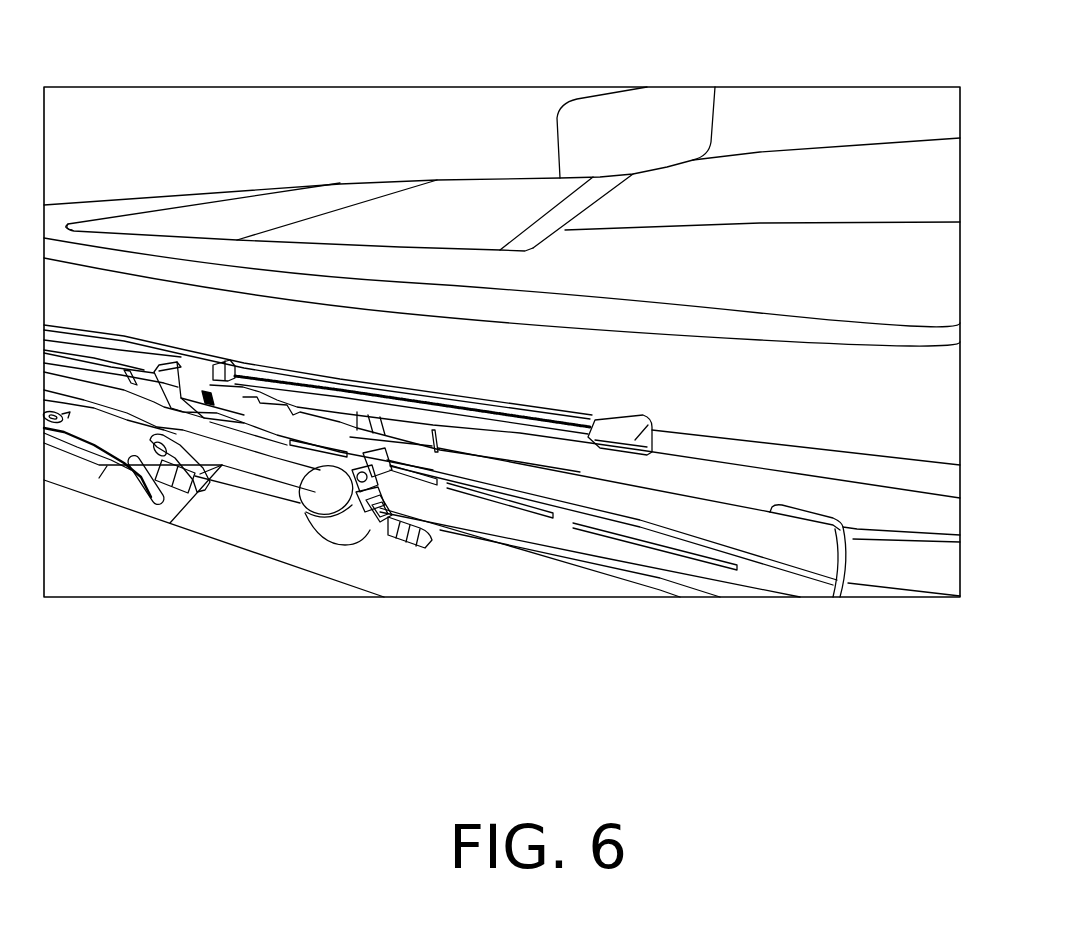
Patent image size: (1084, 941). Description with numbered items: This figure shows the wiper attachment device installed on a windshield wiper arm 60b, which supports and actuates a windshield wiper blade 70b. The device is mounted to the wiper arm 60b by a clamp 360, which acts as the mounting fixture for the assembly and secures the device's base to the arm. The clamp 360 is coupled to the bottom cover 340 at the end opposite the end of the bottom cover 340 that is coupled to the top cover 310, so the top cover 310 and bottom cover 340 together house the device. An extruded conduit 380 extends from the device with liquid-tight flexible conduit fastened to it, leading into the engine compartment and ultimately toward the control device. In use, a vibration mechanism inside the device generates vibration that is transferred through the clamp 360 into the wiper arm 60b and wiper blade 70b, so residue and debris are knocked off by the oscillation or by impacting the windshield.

The second windshield wiper blade 70b is at (630, 404).
The windshield wiper arm 60b is at (657, 538).
The bottom cover 340 is at (300, 512).
The top cover 310 is at (342, 540).
The extruded conduit 380 is at (362, 504).
The clamp 360 is at (396, 540).